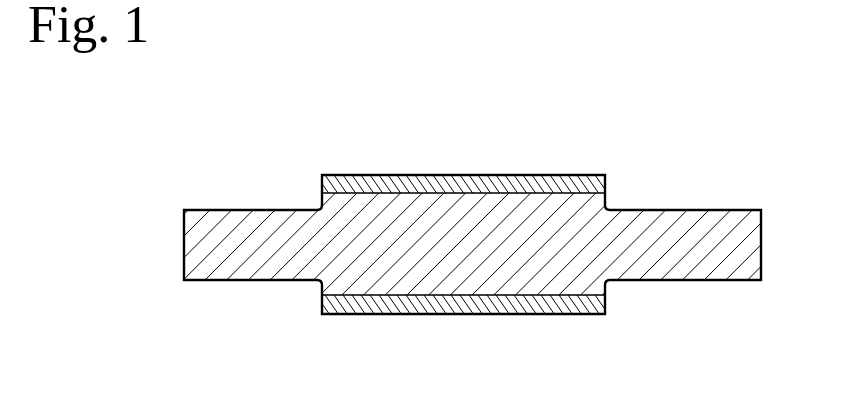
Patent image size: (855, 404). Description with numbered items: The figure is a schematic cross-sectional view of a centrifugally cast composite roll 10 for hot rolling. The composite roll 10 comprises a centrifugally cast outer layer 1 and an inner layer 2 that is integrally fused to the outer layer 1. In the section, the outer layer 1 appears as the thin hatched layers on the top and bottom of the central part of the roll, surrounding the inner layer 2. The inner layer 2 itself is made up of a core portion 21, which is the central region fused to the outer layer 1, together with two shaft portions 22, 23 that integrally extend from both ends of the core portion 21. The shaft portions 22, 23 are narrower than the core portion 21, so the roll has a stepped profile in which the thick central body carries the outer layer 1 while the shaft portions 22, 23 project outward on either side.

The composite roll 10 is at (578, 136).
The outer layer 1 is at (402, 185).
The inner layer 2 is at (273, 290).
The core portion 21 is at (472, 215).
The shaft portion 22 is at (251, 218).
The shaft portion 23 is at (690, 218).